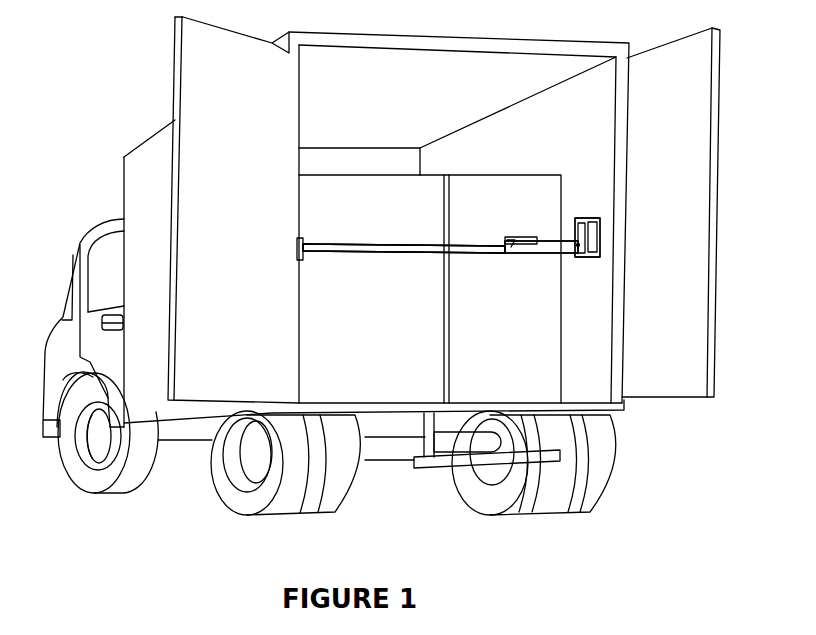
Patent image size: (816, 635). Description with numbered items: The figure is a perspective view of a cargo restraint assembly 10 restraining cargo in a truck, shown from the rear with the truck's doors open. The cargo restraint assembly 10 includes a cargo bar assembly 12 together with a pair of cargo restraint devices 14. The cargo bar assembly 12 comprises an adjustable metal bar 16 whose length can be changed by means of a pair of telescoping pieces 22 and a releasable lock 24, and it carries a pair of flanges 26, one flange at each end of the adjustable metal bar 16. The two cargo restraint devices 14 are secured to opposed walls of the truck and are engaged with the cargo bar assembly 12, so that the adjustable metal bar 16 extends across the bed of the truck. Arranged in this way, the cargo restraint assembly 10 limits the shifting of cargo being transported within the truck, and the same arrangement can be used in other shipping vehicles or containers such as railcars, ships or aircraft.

The cargo restraint assembly 10 is at (456, 234).
The cargo bar assembly 12 is at (529, 256).
The cargo restraint device 14 is at (302, 236).
The adjustable metal bar 16 is at (365, 246).
The telescoping pieces 22 is at (397, 250).
The releasable lock 24 is at (530, 234).
The flange 26 is at (597, 222).